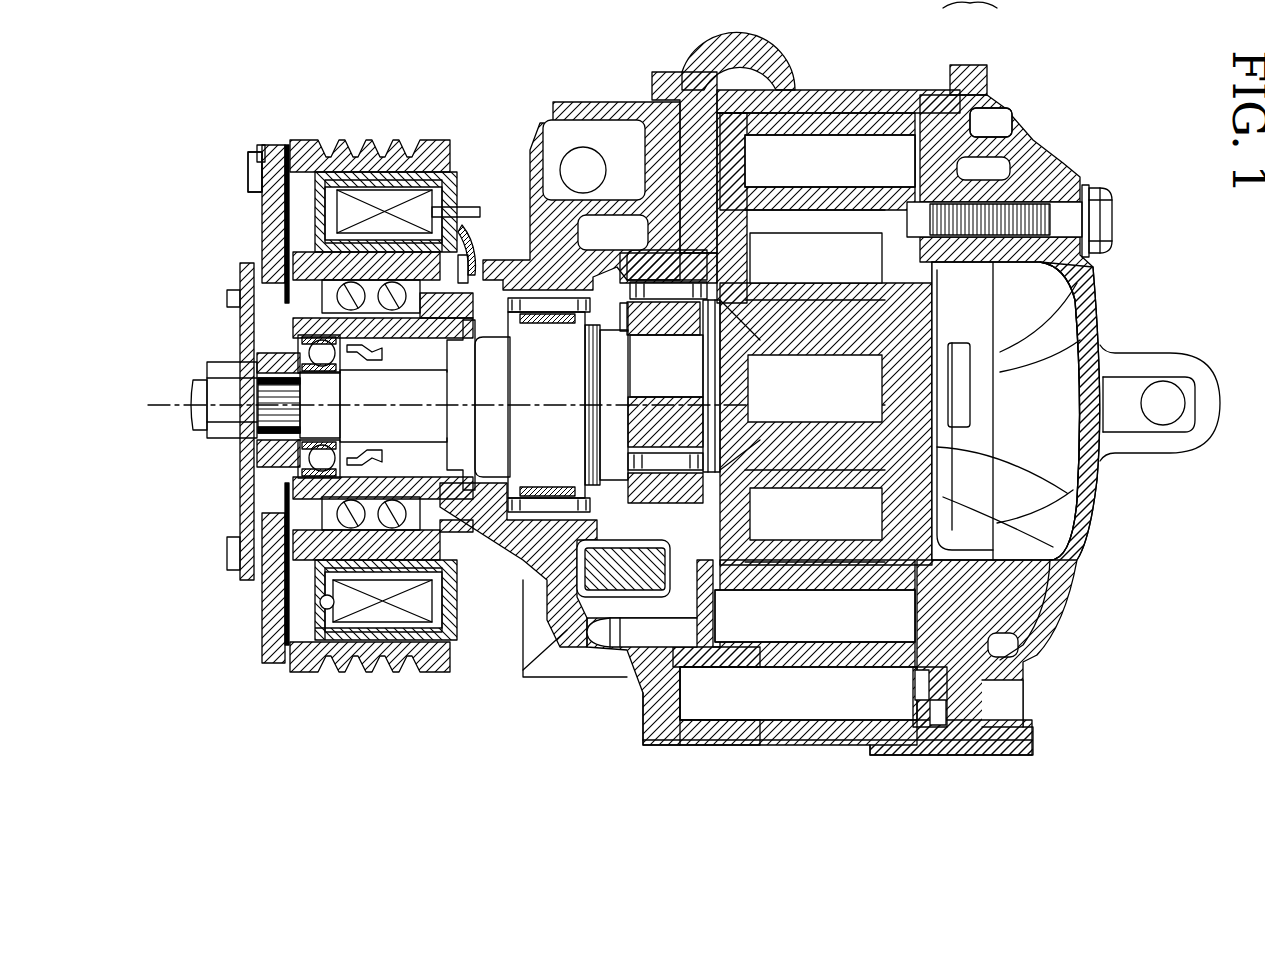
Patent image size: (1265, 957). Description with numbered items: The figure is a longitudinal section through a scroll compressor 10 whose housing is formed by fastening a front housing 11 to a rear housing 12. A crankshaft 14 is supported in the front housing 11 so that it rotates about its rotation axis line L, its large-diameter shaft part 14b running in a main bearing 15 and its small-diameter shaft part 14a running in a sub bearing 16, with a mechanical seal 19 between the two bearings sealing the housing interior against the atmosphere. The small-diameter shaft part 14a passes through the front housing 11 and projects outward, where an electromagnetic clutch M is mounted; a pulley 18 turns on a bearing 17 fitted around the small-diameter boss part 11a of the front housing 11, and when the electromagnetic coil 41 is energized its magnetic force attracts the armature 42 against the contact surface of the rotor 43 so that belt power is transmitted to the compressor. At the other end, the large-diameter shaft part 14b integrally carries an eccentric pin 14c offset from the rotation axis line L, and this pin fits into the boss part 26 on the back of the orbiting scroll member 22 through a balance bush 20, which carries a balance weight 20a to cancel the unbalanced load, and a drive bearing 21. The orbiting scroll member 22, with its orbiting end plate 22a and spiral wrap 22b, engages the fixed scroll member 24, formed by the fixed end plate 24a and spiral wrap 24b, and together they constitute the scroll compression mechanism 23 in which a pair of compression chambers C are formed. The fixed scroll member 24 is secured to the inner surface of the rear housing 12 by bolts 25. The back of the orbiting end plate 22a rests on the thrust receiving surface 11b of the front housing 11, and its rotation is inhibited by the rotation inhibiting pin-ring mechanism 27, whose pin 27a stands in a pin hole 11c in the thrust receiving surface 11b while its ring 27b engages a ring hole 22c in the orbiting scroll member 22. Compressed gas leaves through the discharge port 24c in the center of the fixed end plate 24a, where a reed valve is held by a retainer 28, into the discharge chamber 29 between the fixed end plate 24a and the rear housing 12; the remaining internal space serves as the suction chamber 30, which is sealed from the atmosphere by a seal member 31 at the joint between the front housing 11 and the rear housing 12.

The scroll compressor 10 is at (1078, 78).
The front housing 11 is at (932, 70).
The small-diameter boss part 11a is at (312, 490).
The thrust receiving surface 11b is at (667, 84).
The pin hole 11c is at (597, 663).
The rear housing 12 is at (978, 70).
The crankshaft 14 is at (470, 454).
The small-diameter shaft part 14a is at (320, 418).
The large-diameter shaft part 14b is at (565, 386).
The eccentric pin 14c is at (690, 368).
The main bearing 15 is at (527, 548).
The sub bearing 16 is at (318, 458).
The bearing 17 is at (388, 650).
The pulley 18 is at (358, 142).
The mechanical seal 19 is at (463, 245).
The balance bush 20 is at (665, 290).
The balance weight 20a is at (545, 620).
The drive bearing 21 is at (630, 680).
The orbiting scroll member 22 is at (900, 806).
The orbiting end plate 22a is at (922, 712).
The spiral wrap 22b is at (962, 712).
The ring hole 22c is at (733, 660).
The scroll compression mechanism 23 is at (857, 745).
The fixed scroll member 24 is at (1156, 492).
The fixed end plate 24a is at (1053, 547).
The spiral wrap 24b is at (1067, 493).
The discharge port 24c is at (963, 352).
The bolts 25 is at (1110, 222).
The boss part 26 is at (633, 267).
The rotation inhibiting pin-ring mechanism 27 is at (672, 806).
The pin 27a is at (690, 742).
The ring 27b is at (743, 742).
The retainer 28 is at (1043, 303).
The discharge chamber 29 is at (1065, 300).
The suction chamber 30 is at (873, 103).
The seal member 31 is at (985, 100).
The electromagnetic coil 41 is at (437, 195).
The armature 42 is at (265, 150).
The rotor 43 is at (305, 145).
The compression chambers C is at (820, 143).
The rotation axis line L is at (172, 400).
The electromagnetic clutch M is at (268, 100).